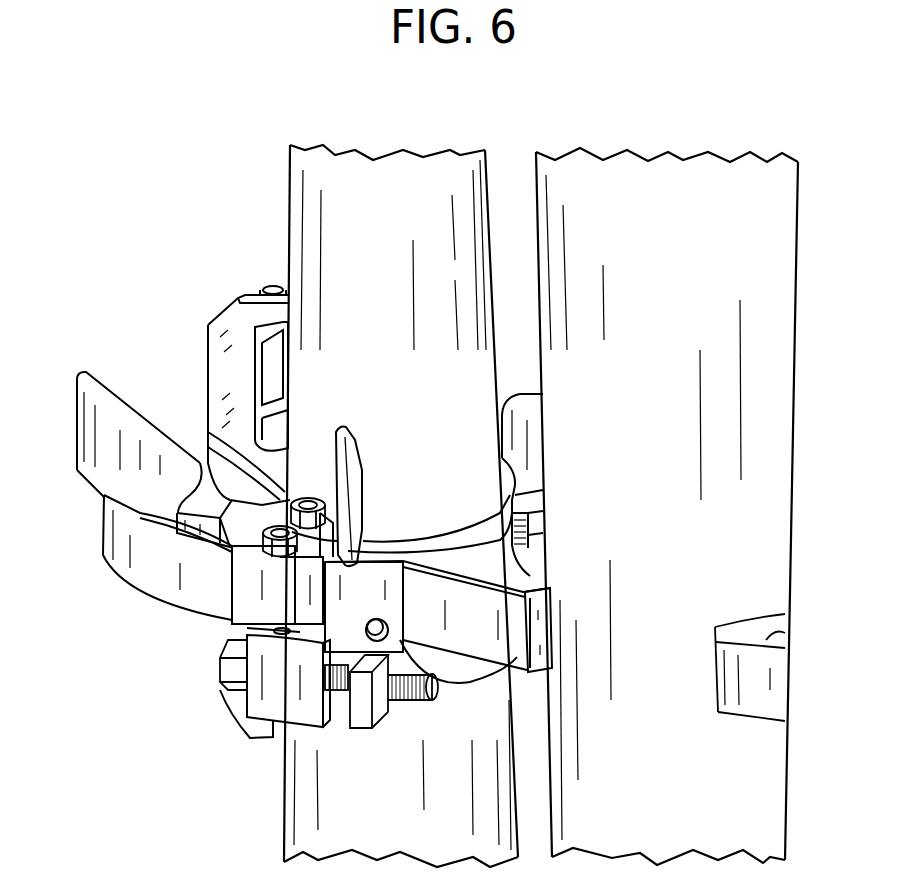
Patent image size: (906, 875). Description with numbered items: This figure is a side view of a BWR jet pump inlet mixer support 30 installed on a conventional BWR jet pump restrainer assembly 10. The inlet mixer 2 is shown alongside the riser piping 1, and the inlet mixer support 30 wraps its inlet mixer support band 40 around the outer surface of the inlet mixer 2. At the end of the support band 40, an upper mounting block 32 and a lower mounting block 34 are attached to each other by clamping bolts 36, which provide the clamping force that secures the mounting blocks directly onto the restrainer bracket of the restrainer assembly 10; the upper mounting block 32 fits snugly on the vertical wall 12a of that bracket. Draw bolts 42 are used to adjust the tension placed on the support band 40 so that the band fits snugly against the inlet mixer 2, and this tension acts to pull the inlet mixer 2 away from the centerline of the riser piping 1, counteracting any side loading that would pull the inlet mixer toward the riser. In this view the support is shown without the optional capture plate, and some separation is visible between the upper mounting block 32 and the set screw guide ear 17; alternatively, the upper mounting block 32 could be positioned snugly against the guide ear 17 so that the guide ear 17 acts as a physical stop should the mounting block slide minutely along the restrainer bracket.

The riser piping 1 is at (660, 167).
The inlet mixer 2 is at (388, 165).
The BWR jet pump restrainer assembly 10 is at (88, 338).
The vertical wall of restrainer bracket 12a is at (122, 548).
The set screw guide ear 17 is at (362, 495).
The inlet mixer support 30 is at (252, 770).
The upper mounting block 32 is at (245, 598).
The lower mounting block 34 is at (280, 692).
The clamping bolt 36 is at (278, 524).
The inlet mixer support band 40 is at (473, 678).
The draw bolt 42 is at (223, 672).